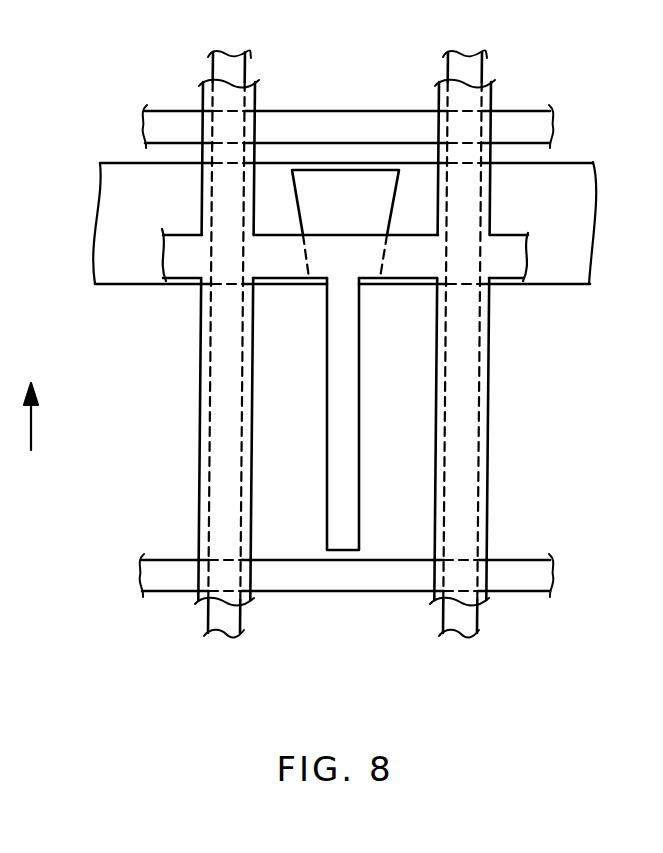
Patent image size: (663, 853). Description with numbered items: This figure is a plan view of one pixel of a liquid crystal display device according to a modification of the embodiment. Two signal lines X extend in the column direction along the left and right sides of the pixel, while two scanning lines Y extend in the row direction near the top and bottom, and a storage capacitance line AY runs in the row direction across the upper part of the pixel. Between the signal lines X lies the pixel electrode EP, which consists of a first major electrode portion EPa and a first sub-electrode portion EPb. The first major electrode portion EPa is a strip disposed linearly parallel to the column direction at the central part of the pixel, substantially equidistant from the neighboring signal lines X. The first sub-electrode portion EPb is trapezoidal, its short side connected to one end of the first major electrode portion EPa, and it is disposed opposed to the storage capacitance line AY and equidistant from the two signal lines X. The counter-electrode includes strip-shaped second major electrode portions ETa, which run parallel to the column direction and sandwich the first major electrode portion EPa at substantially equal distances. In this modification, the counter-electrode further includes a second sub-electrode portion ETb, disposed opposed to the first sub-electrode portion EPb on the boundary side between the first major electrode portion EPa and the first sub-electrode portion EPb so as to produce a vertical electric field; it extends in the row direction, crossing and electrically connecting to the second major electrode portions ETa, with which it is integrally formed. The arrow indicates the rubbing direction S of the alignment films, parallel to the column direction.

The signal line X is at (228, 60).
The scanning line Y is at (140, 127).
The storage capacitance line AY is at (125, 203).
The second sub-electrode portion ETb is at (160, 253).
The pixel electrode EP is at (100, 448).
The first sub-electrode portion EPb is at (322, 218).
The first major electrode portion EPa is at (338, 527).
The rubbing direction S is at (31, 402).
The second major electrode portion ETa is at (218, 634).